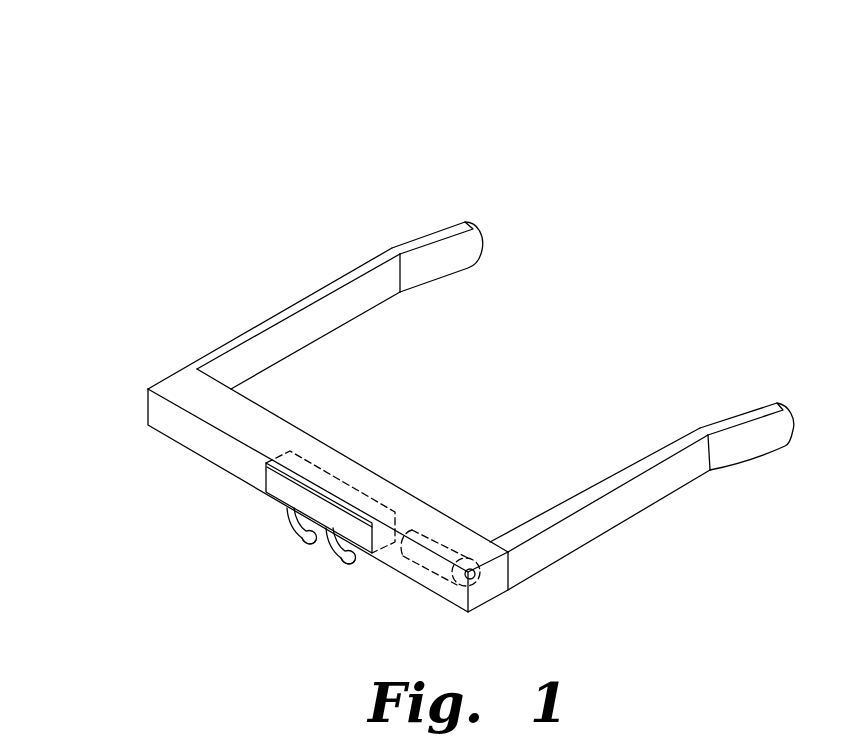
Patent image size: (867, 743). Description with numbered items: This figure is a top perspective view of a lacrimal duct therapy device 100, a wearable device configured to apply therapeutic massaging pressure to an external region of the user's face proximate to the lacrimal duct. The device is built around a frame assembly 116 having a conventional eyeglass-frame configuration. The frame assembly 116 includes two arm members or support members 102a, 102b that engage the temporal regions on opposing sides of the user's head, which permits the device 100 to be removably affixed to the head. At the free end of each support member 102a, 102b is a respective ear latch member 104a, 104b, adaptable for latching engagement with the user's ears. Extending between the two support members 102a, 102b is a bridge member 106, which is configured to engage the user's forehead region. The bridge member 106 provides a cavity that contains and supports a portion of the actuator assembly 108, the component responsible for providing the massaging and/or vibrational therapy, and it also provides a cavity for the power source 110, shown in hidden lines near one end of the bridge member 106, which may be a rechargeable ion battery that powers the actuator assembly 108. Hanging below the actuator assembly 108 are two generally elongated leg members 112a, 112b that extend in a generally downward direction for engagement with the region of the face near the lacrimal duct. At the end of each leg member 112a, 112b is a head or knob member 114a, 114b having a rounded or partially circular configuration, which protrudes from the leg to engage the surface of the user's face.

The lacrimal duct therapy device 100 is at (200, 135).
The support member 102a is at (598, 485).
The support member 102b is at (290, 305).
The ear latch member 104a is at (740, 415).
The ear latch member 104b is at (430, 235).
The bridge member 106 is at (242, 422).
The actuator assembly 108 is at (278, 484).
The power source 110 is at (457, 540).
The leg member 112a is at (327, 553).
The leg member 112b is at (288, 522).
The knob member 114a is at (352, 567).
The knob member 114b is at (298, 543).
The frame assembly 116 is at (160, 365).